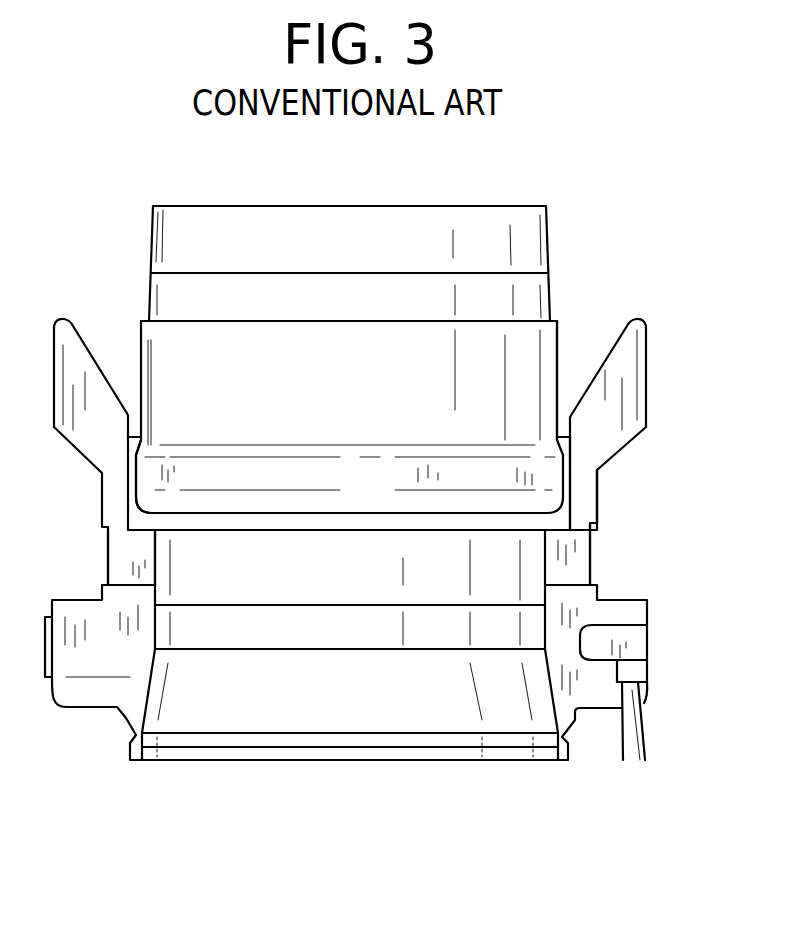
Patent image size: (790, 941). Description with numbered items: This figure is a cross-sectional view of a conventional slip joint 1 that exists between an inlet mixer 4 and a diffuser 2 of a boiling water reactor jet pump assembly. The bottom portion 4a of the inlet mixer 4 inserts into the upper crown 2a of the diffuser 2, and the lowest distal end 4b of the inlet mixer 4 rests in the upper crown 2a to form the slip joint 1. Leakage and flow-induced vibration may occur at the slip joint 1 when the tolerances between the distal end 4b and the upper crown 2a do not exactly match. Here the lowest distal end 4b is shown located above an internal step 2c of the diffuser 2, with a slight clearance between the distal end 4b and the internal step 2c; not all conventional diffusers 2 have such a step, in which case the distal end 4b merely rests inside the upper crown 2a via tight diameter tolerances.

The slip joint 1 is at (572, 487).
The diffuser 2 is at (493, 697).
The upper crown 2a is at (594, 515).
The internal step 2c is at (140, 532).
The inlet mixer 4 is at (547, 230).
The bottom portion 4a is at (559, 347).
The lowest distal end 4b is at (136, 507).